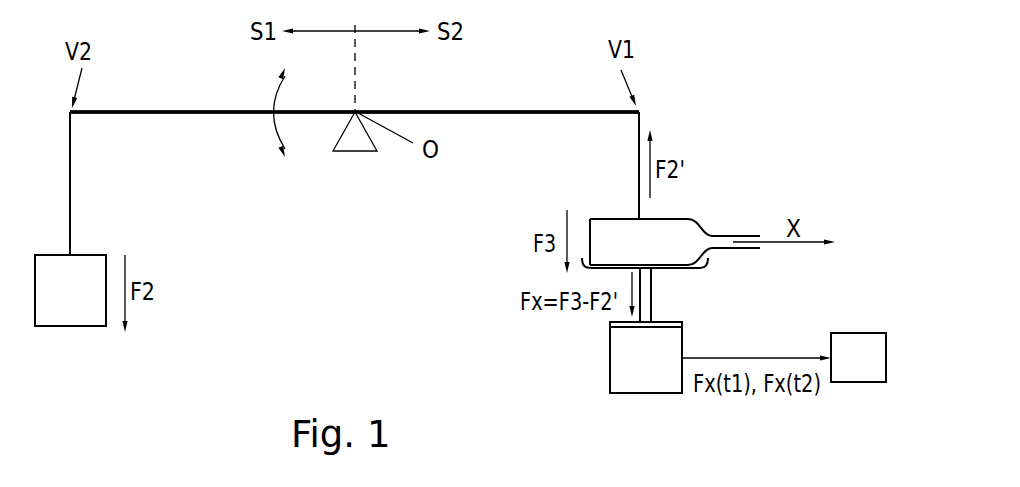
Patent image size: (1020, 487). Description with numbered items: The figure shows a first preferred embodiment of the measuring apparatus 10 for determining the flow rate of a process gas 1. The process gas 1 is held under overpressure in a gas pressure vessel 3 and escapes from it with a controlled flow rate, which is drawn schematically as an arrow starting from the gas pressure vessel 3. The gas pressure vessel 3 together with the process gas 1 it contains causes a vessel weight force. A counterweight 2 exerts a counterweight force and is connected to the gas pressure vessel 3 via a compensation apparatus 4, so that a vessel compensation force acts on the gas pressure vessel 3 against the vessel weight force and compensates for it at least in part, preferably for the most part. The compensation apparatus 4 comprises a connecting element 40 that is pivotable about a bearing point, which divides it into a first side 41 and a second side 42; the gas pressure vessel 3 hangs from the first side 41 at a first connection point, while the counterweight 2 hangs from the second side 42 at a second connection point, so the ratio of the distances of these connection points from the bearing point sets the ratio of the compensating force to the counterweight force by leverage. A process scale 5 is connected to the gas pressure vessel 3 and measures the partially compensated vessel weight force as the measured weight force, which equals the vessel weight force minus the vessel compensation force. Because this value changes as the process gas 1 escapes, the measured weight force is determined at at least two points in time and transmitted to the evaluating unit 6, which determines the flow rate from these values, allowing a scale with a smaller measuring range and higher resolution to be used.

The process gas 1 is at (678, 249).
The counterweight 2 is at (70, 290).
The gas pressure vessel 3 is at (700, 224).
The compensation apparatus 4 is at (510, 77).
The process scale 5 is at (578, 346).
The evaluating unit 6 is at (858, 357).
The measuring apparatus 10 is at (292, 276).
The connecting element 40 is at (166, 101).
The first side 41 is at (488, 114).
The second side 42 is at (205, 114).